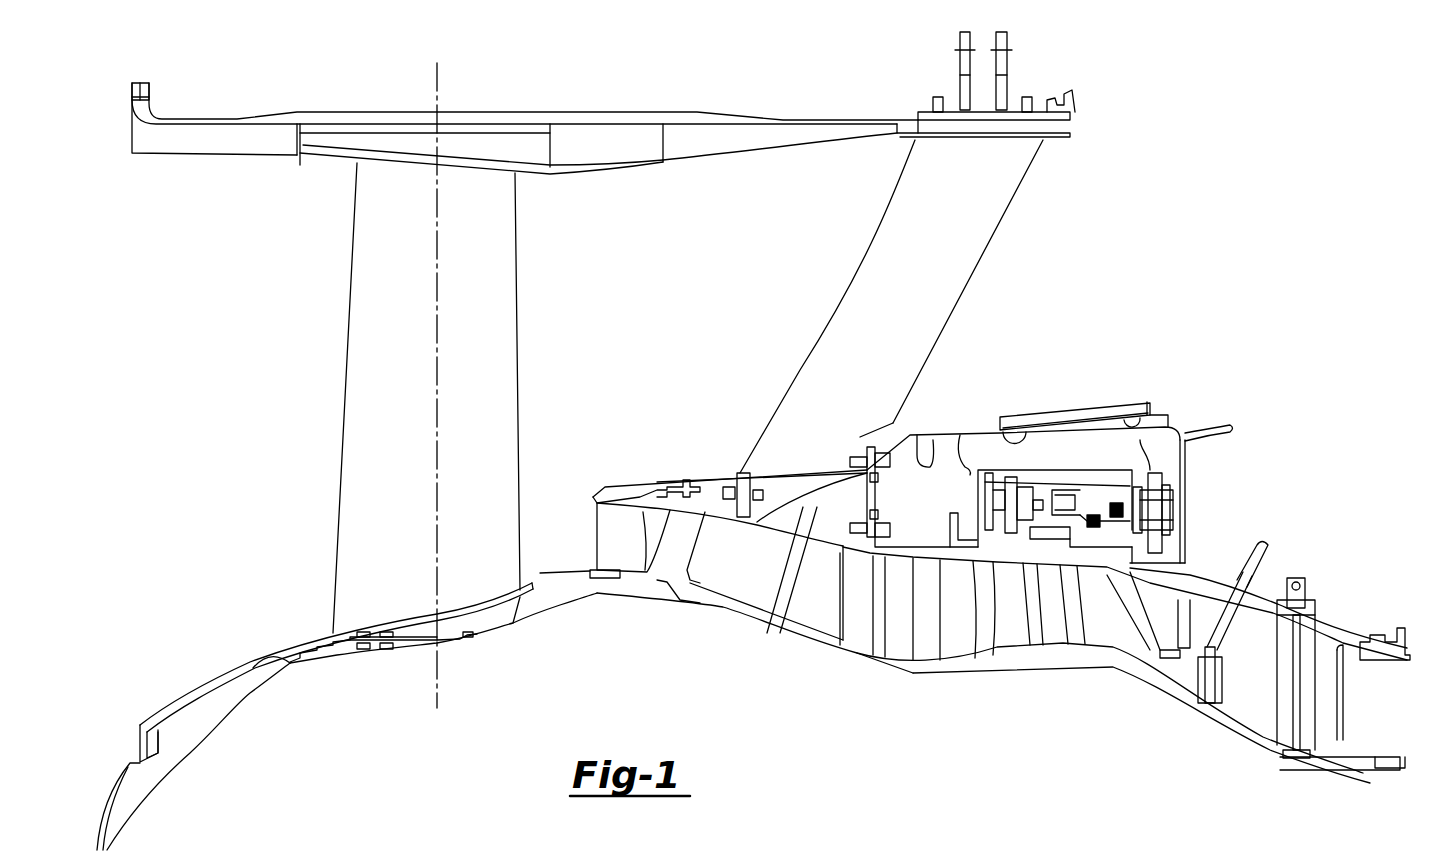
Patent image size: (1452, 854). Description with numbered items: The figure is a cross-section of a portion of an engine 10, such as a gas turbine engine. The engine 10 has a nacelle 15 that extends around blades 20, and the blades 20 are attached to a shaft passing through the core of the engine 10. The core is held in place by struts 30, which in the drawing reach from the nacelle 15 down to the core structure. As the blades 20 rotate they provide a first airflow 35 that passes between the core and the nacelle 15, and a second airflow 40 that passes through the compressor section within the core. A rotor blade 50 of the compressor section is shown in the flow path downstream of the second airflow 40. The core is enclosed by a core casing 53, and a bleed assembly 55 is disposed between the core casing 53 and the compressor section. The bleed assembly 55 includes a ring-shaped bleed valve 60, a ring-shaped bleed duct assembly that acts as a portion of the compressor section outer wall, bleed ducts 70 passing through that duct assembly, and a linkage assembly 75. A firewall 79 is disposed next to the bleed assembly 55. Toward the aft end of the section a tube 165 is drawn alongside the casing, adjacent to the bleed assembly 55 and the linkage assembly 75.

The engine 10 is at (1185, 249).
The nacelle 15 is at (648, 112).
The blades 20 is at (405, 398).
The struts 30 is at (920, 299).
The first airflow 35 is at (691, 406).
The second airflow 40 is at (590, 522).
The compressor rotor blade 50 is at (818, 600).
The core casing 53 is at (1097, 402).
The bleed assembly 55 is at (1143, 447).
The bleed valve 60 is at (1067, 487).
The bleed ducts 70 is at (1102, 550).
The linkage assembly 75 is at (1158, 480).
The firewall 79 is at (1183, 492).
The bleed tube 165 is at (1212, 600).